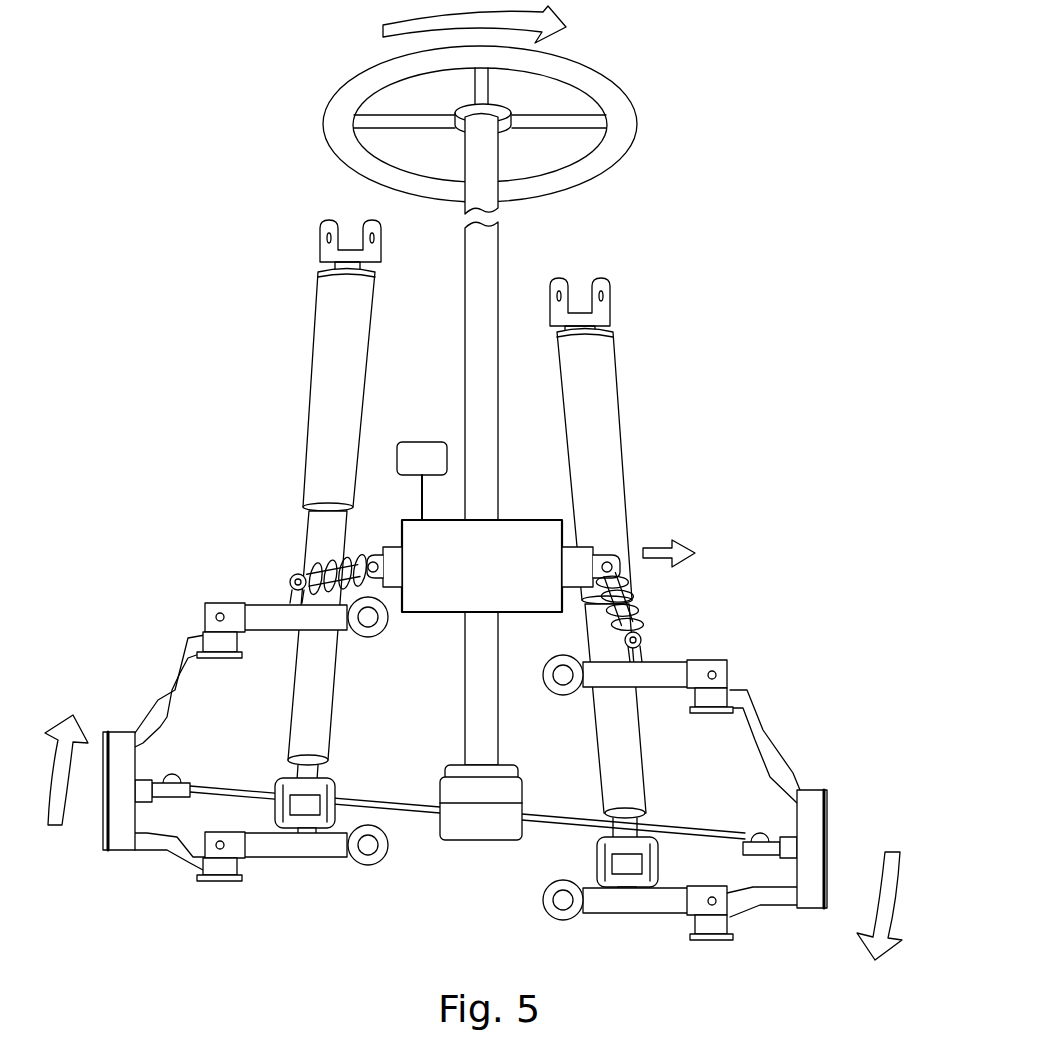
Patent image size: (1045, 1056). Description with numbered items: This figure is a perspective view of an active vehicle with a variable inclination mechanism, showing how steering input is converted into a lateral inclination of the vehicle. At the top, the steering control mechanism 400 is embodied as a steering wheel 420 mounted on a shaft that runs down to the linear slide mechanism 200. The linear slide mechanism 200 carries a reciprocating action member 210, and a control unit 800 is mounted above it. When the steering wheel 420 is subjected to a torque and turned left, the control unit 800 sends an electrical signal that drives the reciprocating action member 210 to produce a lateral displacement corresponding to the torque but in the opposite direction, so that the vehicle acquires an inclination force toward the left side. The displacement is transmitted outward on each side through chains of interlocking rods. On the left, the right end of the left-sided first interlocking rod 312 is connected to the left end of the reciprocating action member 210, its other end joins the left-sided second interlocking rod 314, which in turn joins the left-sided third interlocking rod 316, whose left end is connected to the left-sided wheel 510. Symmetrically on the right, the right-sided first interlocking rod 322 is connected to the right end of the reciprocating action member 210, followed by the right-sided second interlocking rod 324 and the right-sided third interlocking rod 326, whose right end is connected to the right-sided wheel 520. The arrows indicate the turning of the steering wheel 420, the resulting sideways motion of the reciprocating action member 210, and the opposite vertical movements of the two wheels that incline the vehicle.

The steering wheel 420 is at (627, 114).
The steering control mechanism 400 is at (493, 292).
The linear slide mechanism 200 is at (525, 406).
The reciprocating action member 210 is at (568, 552).
The control unit 800 is at (418, 442).
The left-sided first interlocking rod 312 is at (305, 566).
The left-sided second interlocking rod 314 is at (270, 604).
The left-sided third interlocking rod 316 is at (172, 682).
The left-sided wheel 510 is at (118, 745).
The right-sided first interlocking rod 322 is at (642, 599).
The right-sided second interlocking rod 324 is at (663, 673).
The right-sided third interlocking rod 326 is at (757, 730).
The right-sided wheel 520 is at (817, 845).